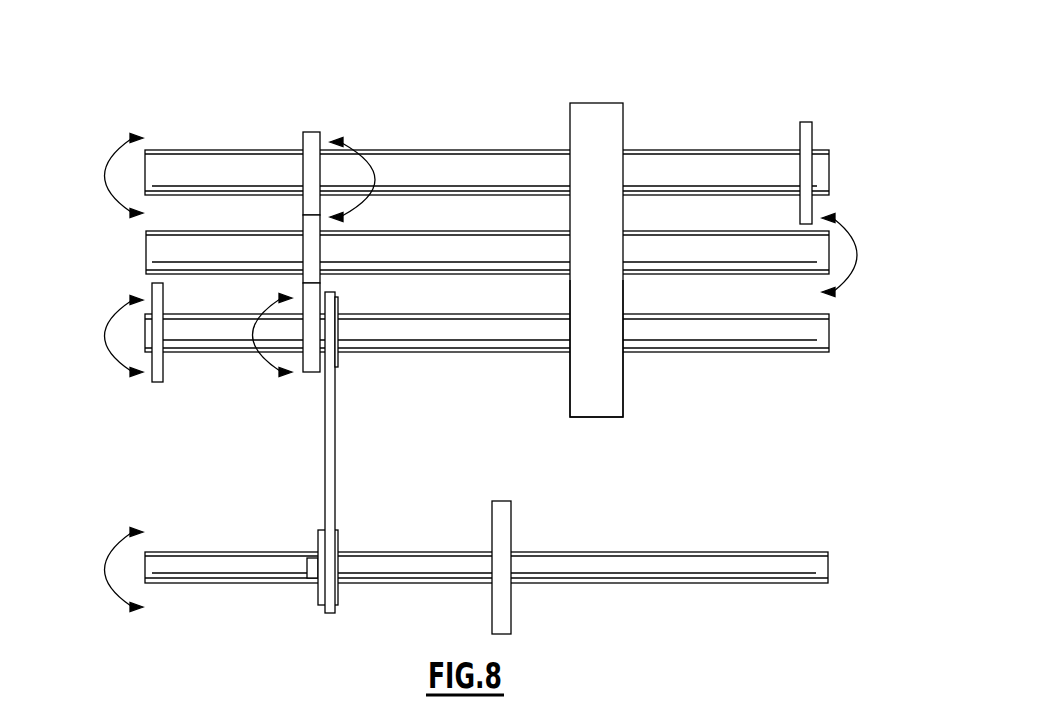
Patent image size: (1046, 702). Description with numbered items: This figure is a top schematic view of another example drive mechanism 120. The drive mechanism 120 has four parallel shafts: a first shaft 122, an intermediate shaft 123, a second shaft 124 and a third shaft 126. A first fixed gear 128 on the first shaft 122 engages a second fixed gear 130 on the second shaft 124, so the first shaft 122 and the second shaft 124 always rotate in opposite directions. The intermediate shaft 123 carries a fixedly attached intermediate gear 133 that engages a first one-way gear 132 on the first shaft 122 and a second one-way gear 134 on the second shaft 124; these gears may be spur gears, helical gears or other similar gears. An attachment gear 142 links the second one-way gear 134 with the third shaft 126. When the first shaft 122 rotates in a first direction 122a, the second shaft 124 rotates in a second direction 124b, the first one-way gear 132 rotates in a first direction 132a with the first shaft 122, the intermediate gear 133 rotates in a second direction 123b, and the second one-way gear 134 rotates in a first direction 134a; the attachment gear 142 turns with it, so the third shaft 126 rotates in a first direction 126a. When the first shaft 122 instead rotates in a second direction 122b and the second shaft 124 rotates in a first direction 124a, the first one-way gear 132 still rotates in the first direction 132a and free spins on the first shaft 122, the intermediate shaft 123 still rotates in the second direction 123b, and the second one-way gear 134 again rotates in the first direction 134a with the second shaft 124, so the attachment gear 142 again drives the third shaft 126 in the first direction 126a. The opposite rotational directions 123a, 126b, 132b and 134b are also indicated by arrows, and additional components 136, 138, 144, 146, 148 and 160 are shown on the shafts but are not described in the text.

The drive mechanism 120 is at (770, 58).
The first shaft 122 is at (657, 150).
The first direction 122a is at (151, 166).
The second direction 122b is at (163, 211).
The intermediate shaft 123 is at (145, 250).
The first rotation direction of intermediate shaft 123a is at (858, 241).
The second direction 123b is at (858, 301).
The second shaft 124 is at (745, 352).
The first direction 124a is at (114, 318).
The second direction 124b is at (115, 388).
The third shaft 126 is at (668, 583).
The first direction 126a is at (151, 561).
The second rotation direction of output shaft 126b is at (163, 603).
The first fixed gear 128 is at (594, 103).
The second fixed gear 130 is at (597, 417).
The first one-way gear 132 is at (310, 132).
The first direction 132a is at (372, 170).
The second rotation direction of first gear 132b is at (372, 213).
The intermediate gear 133 is at (303, 222).
The second one-way gear 134 is at (310, 372).
The first direction 134a is at (251, 325).
The second rotation direction of second gear 134b is at (251, 376).
The first end gear 136 is at (805, 122).
The second end gear 138 is at (158, 382).
The attachment gear 142 is at (338, 365).
The lower gear 144 is at (338, 600).
The connecting shaft 146 is at (335, 420).
The output gear 148 is at (511, 630).
The bearing 160 is at (307, 566).